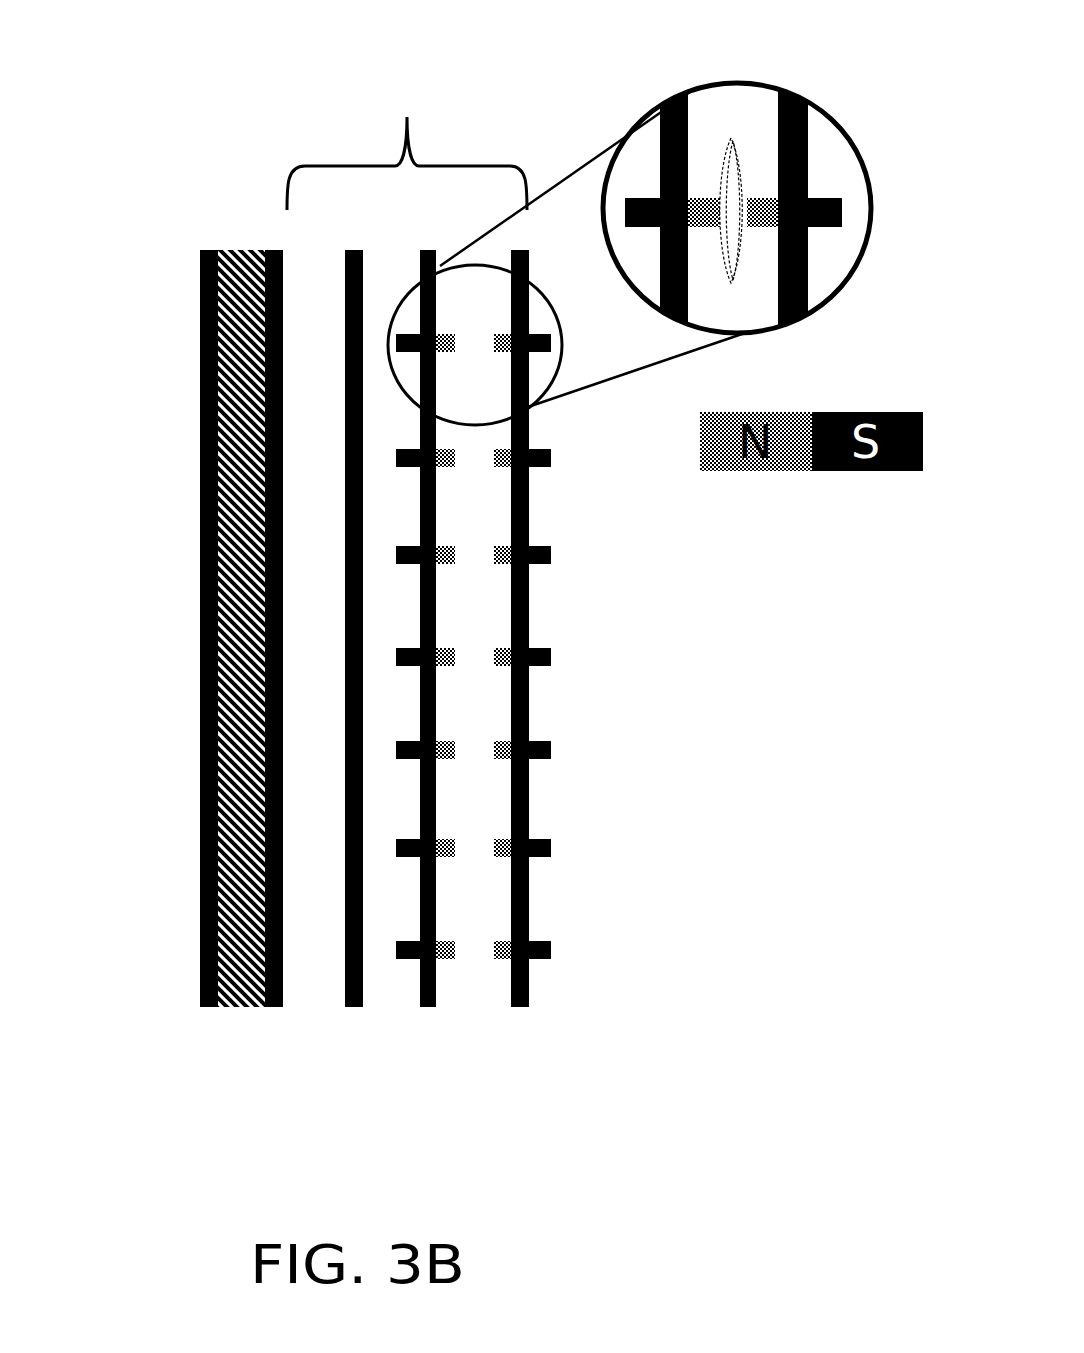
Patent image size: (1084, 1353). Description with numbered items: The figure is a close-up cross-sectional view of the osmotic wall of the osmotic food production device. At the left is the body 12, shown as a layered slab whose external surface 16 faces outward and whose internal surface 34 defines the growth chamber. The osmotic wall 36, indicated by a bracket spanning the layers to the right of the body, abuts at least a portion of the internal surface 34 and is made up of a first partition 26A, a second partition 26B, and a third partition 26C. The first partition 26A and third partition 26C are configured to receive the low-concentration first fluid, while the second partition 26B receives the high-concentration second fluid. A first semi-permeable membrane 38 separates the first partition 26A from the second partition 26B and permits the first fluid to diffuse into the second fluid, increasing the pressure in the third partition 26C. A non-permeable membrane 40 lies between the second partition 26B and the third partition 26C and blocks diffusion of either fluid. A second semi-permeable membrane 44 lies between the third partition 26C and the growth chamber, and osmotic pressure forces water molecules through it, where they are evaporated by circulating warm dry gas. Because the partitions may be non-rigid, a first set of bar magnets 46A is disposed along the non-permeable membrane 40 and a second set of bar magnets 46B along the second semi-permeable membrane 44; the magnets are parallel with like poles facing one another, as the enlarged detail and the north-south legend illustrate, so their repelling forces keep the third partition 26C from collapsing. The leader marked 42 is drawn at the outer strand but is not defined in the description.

The body 12 is at (232, 380).
The external surface 16 is at (200, 633).
The internal surface 34 is at (287, 306).
The osmotic wall 36 is at (407, 142).
The first semi-permeable membrane 38 is at (355, 1007).
The non-permeable membrane 40 is at (423, 523).
The second strand 42 is at (517, 1005).
The second semi-permeable membrane 44 is at (530, 803).
The first partition 26A is at (300, 988).
The second partition 26B is at (392, 988).
The third partition 26C is at (472, 625).
The first set of bar magnets 46A is at (640, 197).
The second set of bar magnets 46B is at (817, 197).